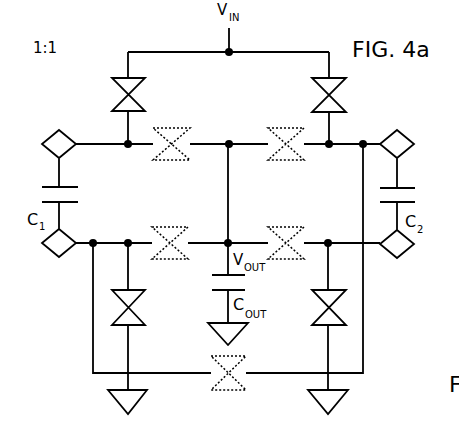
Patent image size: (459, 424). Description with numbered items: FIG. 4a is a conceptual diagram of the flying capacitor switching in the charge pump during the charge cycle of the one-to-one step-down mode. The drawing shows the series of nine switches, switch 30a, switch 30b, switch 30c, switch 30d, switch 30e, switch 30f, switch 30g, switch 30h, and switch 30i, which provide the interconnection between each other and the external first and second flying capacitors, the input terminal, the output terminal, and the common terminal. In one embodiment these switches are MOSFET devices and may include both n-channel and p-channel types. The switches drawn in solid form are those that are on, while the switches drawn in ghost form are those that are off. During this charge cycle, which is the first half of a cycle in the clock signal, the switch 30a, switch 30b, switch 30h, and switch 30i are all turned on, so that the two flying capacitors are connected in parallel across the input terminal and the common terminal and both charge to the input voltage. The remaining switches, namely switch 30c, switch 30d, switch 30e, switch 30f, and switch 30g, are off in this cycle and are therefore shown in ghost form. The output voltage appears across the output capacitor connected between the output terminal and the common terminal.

The switch 30a is at (112, 94).
The switch 30b is at (344, 95).
The switch 30c is at (171, 155).
The switch 30d is at (286, 155).
The switch 30e is at (170, 232).
The switch 30f is at (286, 232).
The switch 30g is at (228, 383).
The switch 30h is at (142, 328).
The switch 30i is at (315, 328).